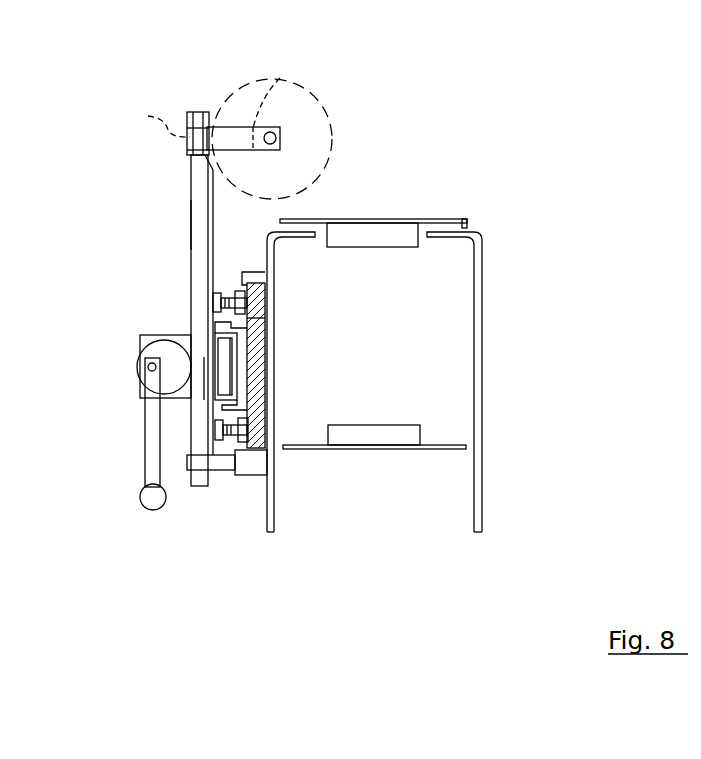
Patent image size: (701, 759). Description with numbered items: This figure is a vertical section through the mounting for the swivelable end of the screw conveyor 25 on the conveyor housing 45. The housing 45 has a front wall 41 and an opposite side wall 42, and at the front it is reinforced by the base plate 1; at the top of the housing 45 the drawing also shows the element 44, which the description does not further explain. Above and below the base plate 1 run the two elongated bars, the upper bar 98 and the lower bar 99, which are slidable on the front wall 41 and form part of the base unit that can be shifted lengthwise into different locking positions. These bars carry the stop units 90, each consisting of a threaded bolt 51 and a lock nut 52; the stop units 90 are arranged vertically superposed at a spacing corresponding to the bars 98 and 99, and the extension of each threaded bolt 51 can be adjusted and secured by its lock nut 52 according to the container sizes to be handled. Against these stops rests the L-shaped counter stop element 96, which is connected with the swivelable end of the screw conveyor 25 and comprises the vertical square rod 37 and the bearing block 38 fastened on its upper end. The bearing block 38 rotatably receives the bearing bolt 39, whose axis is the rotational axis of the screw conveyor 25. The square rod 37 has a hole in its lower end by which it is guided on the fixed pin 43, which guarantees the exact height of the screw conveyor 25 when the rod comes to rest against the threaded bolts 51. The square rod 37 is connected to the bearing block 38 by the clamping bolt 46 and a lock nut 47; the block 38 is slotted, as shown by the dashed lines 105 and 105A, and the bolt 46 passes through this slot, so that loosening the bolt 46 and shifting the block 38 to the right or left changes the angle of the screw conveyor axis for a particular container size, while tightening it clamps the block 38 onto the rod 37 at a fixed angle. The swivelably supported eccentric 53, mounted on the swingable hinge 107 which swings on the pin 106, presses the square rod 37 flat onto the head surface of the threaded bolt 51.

The base plate 1 is at (262, 358).
The screw conveyor 25 is at (298, 103).
The square rod 37 is at (197, 183).
The bearing block 38 is at (233, 133).
The bearing bolt 39 is at (247, 137).
The front wall 41 is at (275, 513).
The side wall 42 is at (480, 470).
The fixed pin 43 is at (228, 465).
The lid 44 is at (448, 217).
The conveyor housing 45 is at (502, 260).
The clamping bolt 46 is at (188, 113).
The lock nut 47 is at (188, 153).
The threaded bolt 51 is at (213, 305).
The lock nut 52 is at (242, 272).
The eccentric 53 is at (138, 365).
The stop unit 90 is at (230, 282).
The counter stop element 96 is at (182, 223).
The upper bar 98 is at (262, 317).
The lower bar 99 is at (265, 417).
The dashed line 105 is at (280, 80).
The dashed line 105A is at (144, 117).
The pin 106 is at (225, 320).
The swingable hinge 107 is at (185, 395).